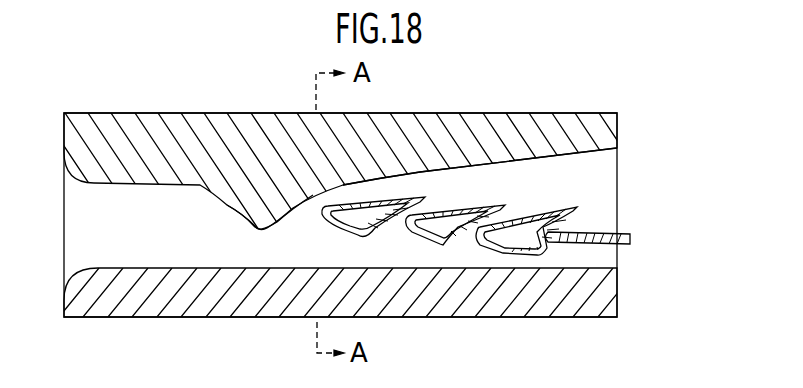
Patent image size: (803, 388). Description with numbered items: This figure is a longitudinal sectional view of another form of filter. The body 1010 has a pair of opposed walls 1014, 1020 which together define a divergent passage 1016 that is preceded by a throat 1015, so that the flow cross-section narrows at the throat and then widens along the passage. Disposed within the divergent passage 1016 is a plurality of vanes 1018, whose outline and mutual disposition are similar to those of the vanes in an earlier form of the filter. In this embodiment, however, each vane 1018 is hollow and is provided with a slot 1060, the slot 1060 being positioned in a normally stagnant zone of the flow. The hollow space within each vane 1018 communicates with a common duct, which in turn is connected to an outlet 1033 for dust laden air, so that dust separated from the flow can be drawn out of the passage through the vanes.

The body 1010 is at (537, 112).
The wall 1014 is at (185, 128).
The throat 1015 is at (262, 229).
The divergent passage 1016 is at (547, 158).
The vane 1018 is at (405, 203).
The wall 1020 is at (178, 308).
The outlet 1033 is at (605, 255).
The slot 1060 is at (343, 232).